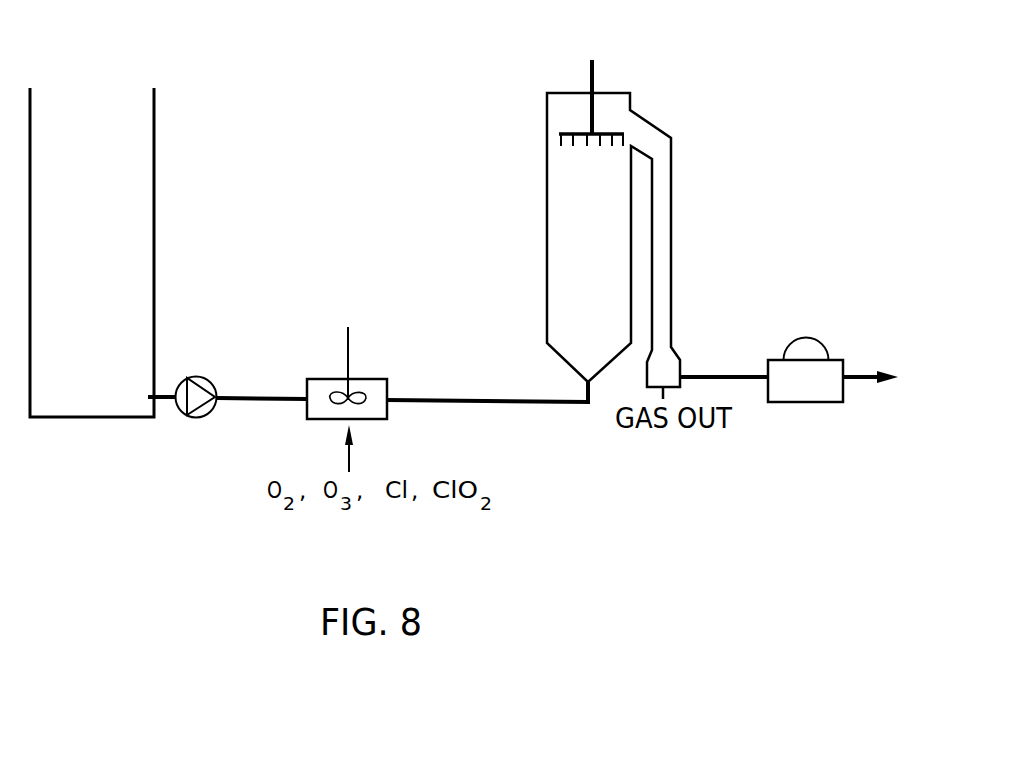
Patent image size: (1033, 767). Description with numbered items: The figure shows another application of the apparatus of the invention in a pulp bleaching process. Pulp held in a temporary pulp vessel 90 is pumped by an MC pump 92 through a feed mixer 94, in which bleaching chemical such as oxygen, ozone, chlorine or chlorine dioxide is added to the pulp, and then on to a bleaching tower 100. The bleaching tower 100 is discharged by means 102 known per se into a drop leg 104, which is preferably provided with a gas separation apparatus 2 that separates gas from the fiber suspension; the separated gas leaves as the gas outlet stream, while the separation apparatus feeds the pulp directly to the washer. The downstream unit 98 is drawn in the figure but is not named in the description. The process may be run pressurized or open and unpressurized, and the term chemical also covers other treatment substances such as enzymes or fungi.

The gas separation apparatus 2 is at (680, 368).
The temporary pulp vessel 90 is at (134, 267).
The MC pump 92 is at (213, 378).
The feed mixer 94 is at (368, 378).
The gas treatment unit 98 is at (808, 345).
The bleaching tower 100 is at (565, 237).
The discharge means 102 is at (596, 118).
The drop leg 104 is at (663, 204).